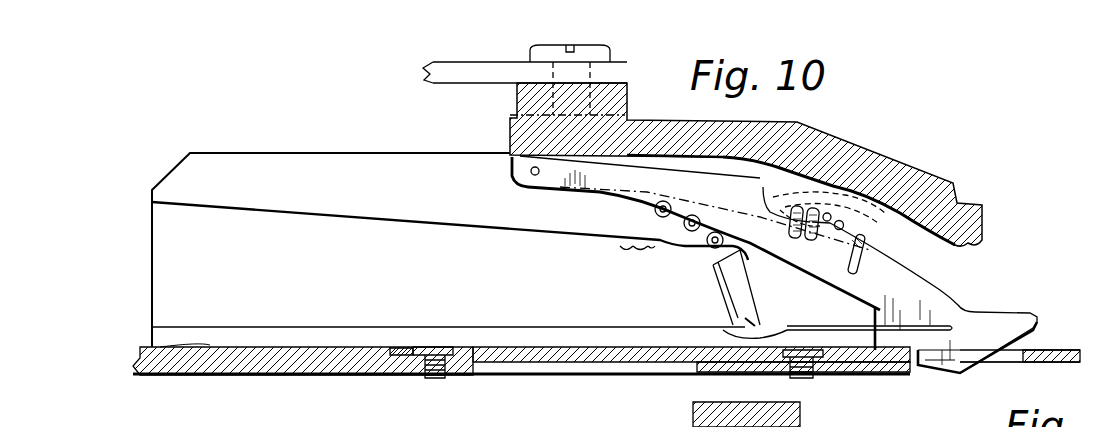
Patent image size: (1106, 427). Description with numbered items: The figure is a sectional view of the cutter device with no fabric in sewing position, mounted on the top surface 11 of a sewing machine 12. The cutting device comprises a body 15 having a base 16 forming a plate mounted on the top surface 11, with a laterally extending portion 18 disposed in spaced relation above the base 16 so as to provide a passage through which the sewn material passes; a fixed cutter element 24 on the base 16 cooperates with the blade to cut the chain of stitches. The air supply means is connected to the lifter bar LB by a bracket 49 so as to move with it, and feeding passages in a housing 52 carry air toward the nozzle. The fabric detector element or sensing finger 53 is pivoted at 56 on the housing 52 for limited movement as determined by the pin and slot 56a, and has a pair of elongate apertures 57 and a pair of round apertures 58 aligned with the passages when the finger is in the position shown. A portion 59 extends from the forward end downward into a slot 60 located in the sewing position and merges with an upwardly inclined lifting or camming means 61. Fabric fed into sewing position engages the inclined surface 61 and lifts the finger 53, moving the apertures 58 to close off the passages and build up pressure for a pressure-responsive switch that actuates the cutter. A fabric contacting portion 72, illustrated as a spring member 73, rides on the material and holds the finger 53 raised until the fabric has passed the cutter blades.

The top surface 11 is at (193, 345).
The sewing machine 12 is at (302, 368).
The body 15 is at (148, 217).
The base 16 is at (551, 338).
The laterally extending portion 18 is at (442, 229).
The fixed cutter element 24 is at (716, 306).
The bracket 49 is at (525, 97).
The housing 52 is at (825, 143).
The fabric detector element 53 is at (940, 298).
The pivot 56 is at (523, 183).
The pin and slot 56a is at (872, 250).
The elongate apertures 57 is at (763, 192).
The round apertures 58 is at (853, 212).
The portion 59 is at (940, 366).
The slot 60 is at (1012, 357).
The lifting or camming means 61 is at (993, 364).
The fabric contacting portion 72 is at (855, 340).
The spring member 73 is at (840, 308).
The lifter bar LB is at (478, 68).